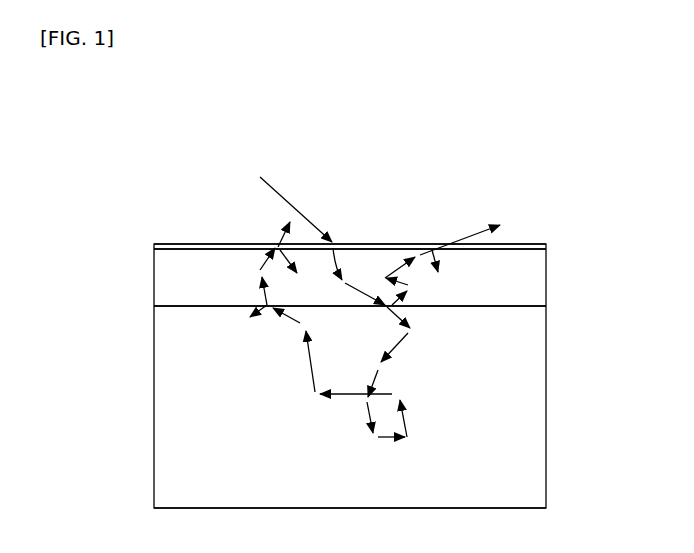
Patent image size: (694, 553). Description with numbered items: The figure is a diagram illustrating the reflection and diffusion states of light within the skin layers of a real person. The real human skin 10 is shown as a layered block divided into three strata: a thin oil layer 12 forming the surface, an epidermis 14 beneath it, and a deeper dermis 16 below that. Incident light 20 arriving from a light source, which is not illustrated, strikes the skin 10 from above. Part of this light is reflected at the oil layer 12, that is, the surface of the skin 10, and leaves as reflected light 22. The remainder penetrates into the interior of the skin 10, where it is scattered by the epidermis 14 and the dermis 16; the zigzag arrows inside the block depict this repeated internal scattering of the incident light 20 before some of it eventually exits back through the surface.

The skin 10 is at (186, 100).
The oil layer 12 is at (548, 248).
The epidermis 14 is at (548, 286).
The dermis 16 is at (548, 392).
The incident light 20 is at (280, 196).
The reflected light 22 is at (546, 234).